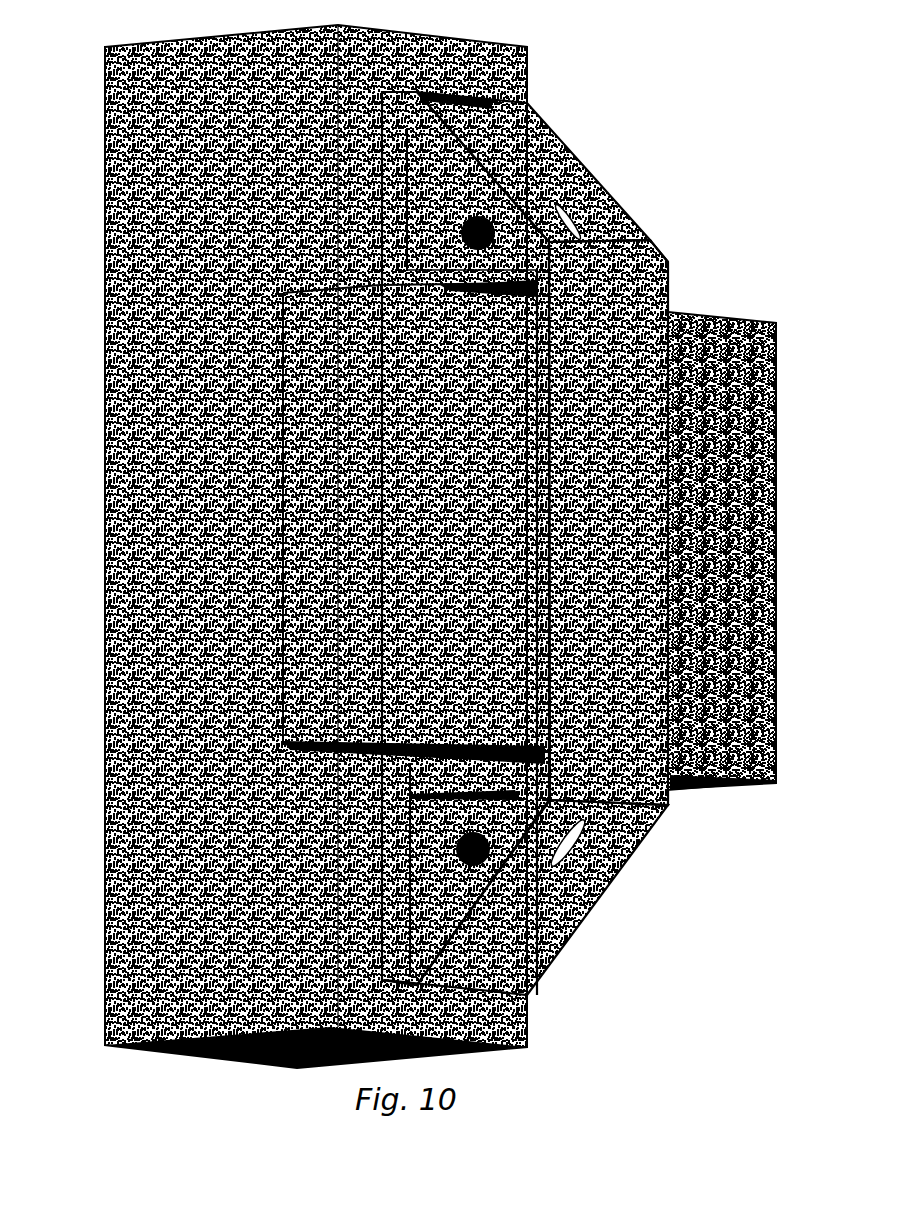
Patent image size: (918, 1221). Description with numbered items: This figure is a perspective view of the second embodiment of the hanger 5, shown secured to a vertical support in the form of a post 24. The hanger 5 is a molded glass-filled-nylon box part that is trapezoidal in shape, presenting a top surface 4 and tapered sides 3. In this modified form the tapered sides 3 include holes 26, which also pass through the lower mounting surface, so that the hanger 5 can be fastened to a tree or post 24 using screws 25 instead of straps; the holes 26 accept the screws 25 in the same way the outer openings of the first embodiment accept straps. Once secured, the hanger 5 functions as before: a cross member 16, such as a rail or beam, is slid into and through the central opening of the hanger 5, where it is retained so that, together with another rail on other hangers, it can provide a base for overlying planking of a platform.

The post 24 is at (167, 480).
The tapered sides 3 is at (570, 147).
The screws 25 is at (557, 132).
The holes 26 is at (600, 187).
The hanger 5 is at (655, 238).
The top surface 4 is at (670, 287).
The cross member 16 is at (777, 538).